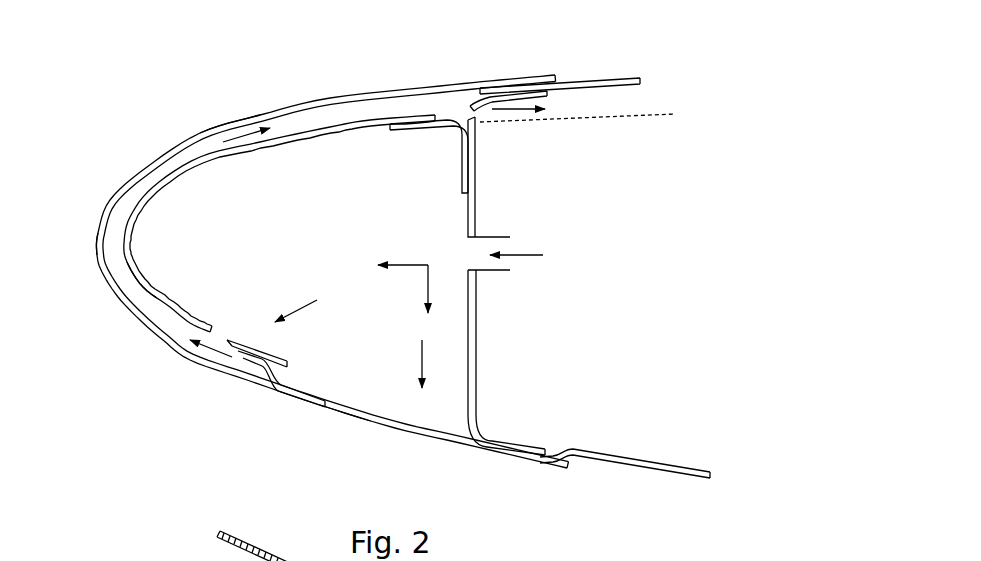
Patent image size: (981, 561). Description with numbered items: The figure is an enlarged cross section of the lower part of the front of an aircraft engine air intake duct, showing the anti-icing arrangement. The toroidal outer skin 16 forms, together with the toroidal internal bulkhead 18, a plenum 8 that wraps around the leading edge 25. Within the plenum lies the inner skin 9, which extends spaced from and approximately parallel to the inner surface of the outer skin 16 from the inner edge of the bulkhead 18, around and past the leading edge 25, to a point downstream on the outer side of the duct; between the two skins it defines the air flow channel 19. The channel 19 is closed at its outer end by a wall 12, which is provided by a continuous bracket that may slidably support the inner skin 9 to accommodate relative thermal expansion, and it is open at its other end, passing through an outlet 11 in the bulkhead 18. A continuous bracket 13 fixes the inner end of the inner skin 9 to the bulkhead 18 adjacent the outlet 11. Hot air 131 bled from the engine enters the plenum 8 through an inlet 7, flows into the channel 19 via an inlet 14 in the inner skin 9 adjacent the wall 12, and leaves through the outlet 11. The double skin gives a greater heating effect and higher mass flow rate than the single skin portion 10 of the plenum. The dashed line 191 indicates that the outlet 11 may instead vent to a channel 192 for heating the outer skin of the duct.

The inlet 7 is at (477, 278).
The plenum 8 is at (223, 187).
The inner skin 9 is at (170, 308).
The single skin portion 10 is at (345, 420).
The outlet 11 is at (468, 112).
The wall 12 is at (265, 380).
The bracket 13 is at (412, 127).
The inlet 14 is at (218, 335).
The outer skin 16 is at (112, 293).
The internal bulkhead 18 is at (475, 197).
The channel 19 is at (142, 303).
The leading edge 25 is at (97, 220).
The hot air 131 is at (530, 248).
The dashed line 191 is at (630, 118).
The channel 192 is at (605, 100).